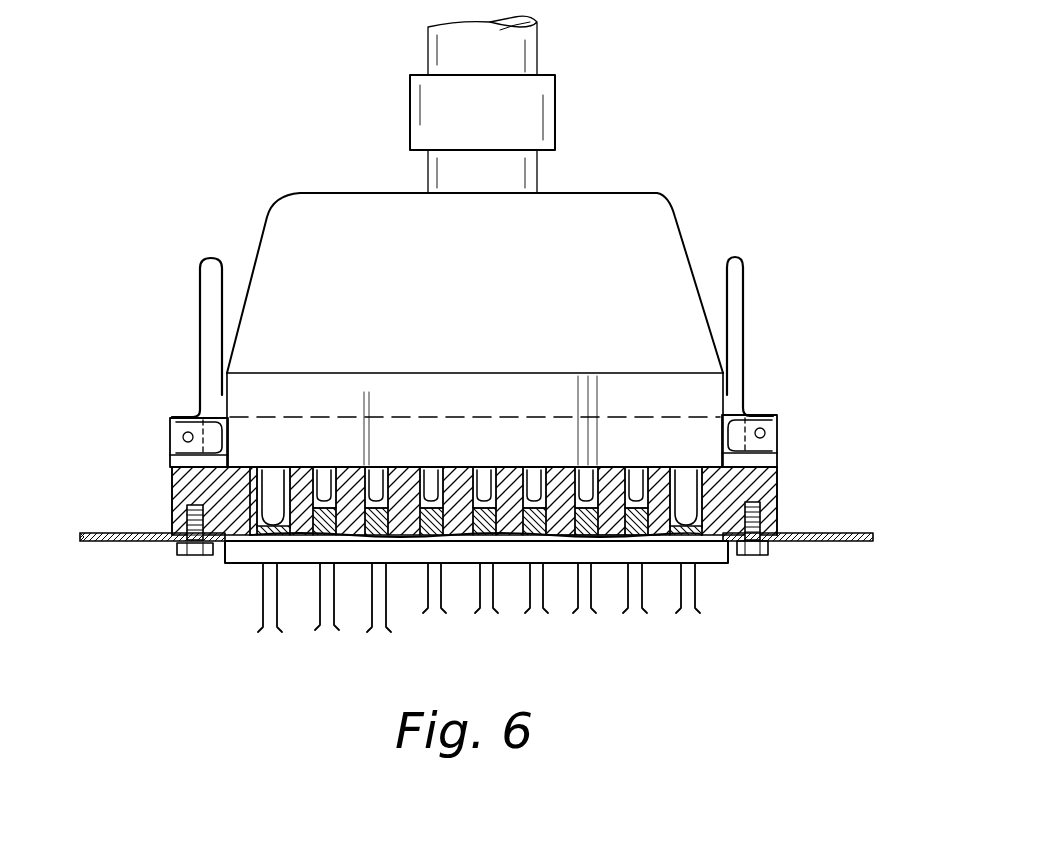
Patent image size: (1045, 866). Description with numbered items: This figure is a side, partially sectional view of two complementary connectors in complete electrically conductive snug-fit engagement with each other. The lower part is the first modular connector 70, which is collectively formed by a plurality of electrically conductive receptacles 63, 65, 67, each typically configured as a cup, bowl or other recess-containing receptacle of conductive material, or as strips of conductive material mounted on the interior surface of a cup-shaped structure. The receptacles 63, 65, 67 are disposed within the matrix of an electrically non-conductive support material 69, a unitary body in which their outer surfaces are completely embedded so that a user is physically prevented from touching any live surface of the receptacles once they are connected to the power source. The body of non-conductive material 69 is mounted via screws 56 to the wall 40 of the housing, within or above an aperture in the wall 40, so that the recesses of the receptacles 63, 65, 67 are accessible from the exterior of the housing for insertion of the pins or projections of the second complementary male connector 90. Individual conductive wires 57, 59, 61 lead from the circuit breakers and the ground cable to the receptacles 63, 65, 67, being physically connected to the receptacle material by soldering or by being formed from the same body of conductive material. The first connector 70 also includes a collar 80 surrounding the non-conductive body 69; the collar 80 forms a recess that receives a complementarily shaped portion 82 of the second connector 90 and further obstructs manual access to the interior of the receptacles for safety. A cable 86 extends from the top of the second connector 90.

The wall 40 is at (843, 531).
The screws 56 is at (197, 558).
The conductive wire 57 is at (702, 585).
The conductive wire 59 is at (485, 588).
The conductive wire 61 is at (636, 588).
The electrically conductive receptacle 63 is at (185, 487).
The electrically conductive receptacle 65 is at (608, 540).
The electrically conductive receptacle 67 is at (437, 548).
The electrically non-conductive support material 69 is at (173, 508).
The first modular connector 70 is at (790, 457).
The collar 80 is at (693, 415).
The complementarily shaped portion 82 is at (688, 390).
The cable 86 is at (540, 40).
The second complementary male connector 90 is at (667, 190).